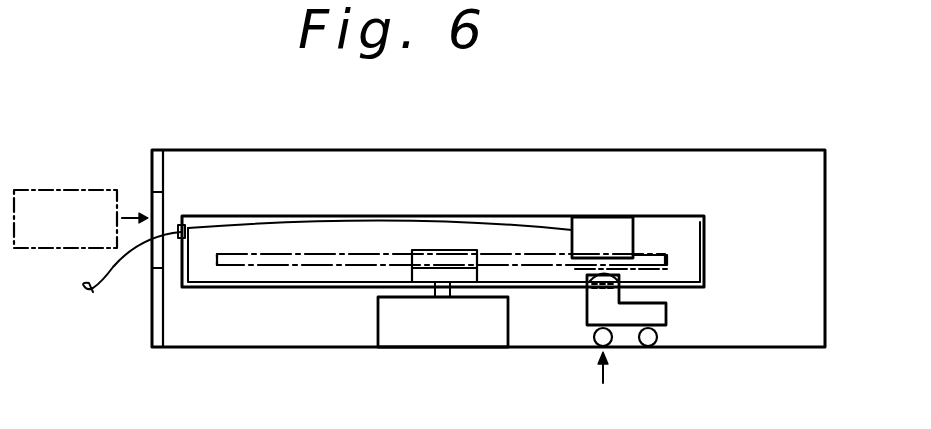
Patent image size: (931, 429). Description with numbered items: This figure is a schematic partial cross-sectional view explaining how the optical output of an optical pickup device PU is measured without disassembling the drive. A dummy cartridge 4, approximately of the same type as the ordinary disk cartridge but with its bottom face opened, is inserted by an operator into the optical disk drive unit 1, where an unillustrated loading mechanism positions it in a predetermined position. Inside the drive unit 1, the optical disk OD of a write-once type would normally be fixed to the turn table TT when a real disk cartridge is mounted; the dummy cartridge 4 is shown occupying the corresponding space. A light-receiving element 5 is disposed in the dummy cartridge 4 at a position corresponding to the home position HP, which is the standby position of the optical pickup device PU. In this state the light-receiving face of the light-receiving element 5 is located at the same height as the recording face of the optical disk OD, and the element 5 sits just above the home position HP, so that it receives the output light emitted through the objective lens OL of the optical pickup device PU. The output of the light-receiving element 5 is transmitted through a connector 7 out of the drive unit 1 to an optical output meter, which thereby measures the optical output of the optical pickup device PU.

The optical disk drive unit 1 is at (746, 151).
The dummy cartridge 4 is at (99, 190).
The connector 7 is at (182, 225).
The optical disk OD is at (280, 266).
The turn table TT is at (388, 282).
The light-receiving element 5 is at (585, 272).
The objective lens OL is at (618, 279).
The optical pickup device PU is at (664, 315).
The home position HP is at (601, 383).